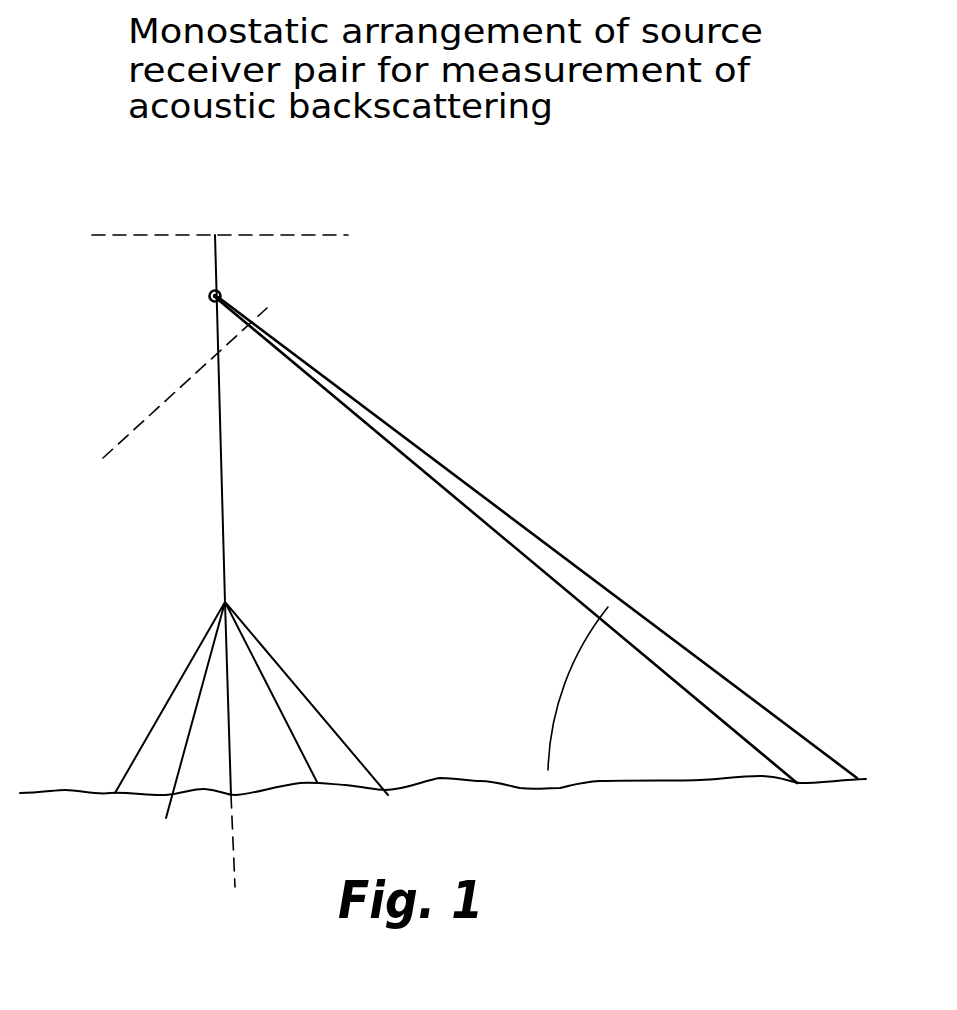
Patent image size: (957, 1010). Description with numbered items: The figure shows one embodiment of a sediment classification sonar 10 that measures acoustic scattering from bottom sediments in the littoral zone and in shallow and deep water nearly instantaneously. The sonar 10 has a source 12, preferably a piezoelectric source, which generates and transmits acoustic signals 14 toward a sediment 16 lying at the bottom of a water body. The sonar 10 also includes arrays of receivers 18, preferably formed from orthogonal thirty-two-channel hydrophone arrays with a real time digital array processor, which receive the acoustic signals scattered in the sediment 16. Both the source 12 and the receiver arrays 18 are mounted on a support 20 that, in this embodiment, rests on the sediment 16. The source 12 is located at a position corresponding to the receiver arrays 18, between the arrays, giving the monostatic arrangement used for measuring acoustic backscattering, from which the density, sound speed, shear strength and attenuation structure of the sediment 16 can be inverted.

The sonar 10 is at (500, 325).
The source 12 is at (205, 297).
The acoustic signals 14 is at (575, 592).
The sediment 16 is at (462, 778).
The arrays of receivers 18 is at (273, 312).
The support 20 is at (225, 542).